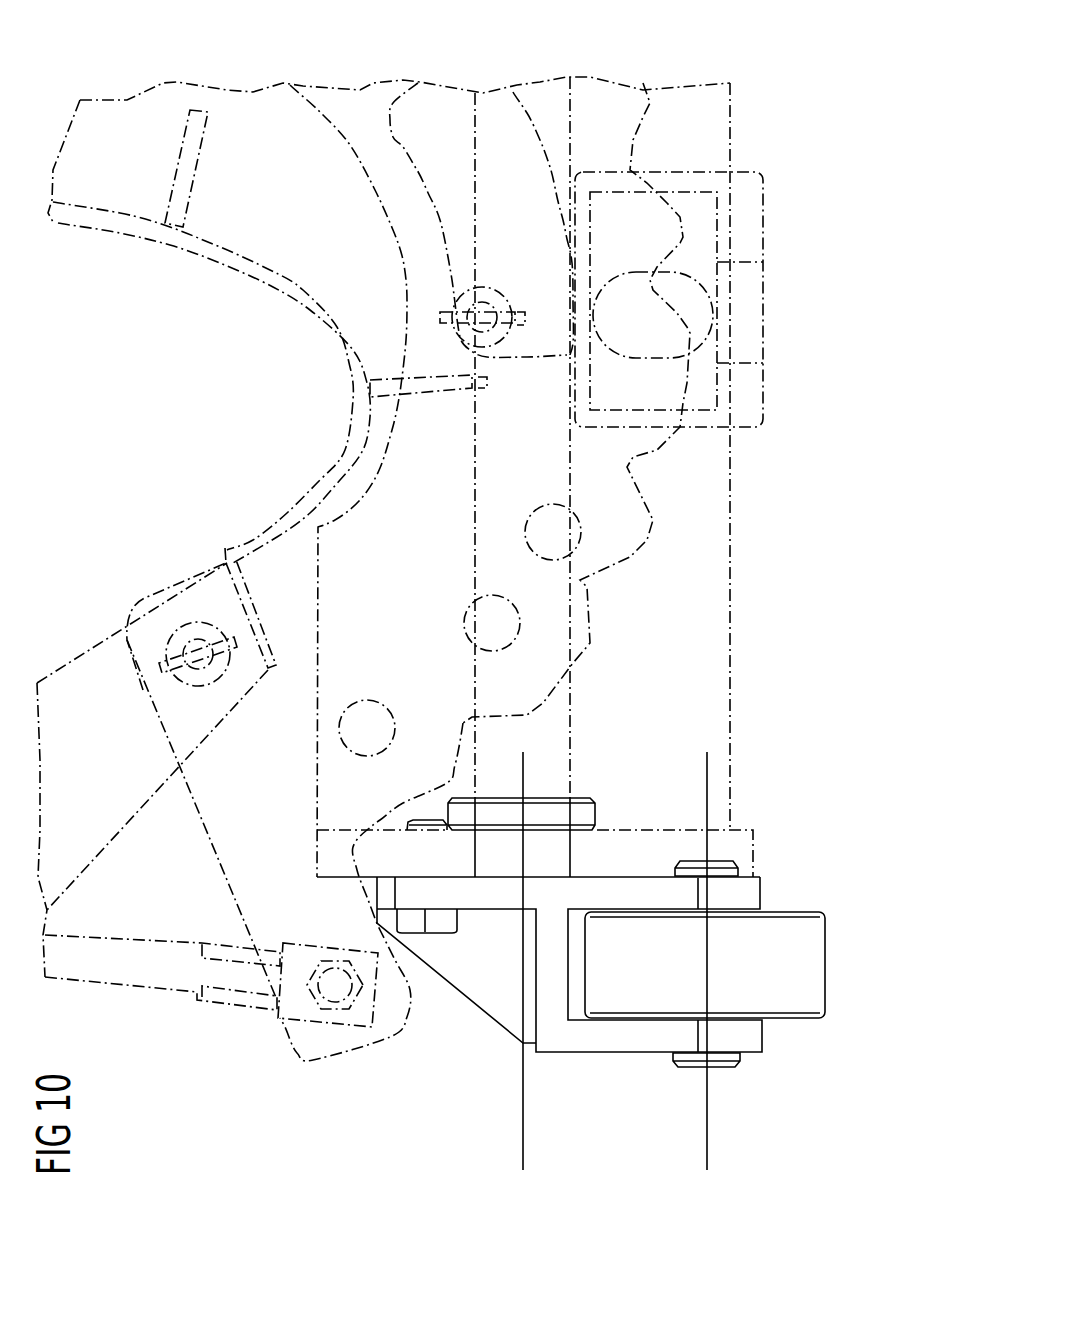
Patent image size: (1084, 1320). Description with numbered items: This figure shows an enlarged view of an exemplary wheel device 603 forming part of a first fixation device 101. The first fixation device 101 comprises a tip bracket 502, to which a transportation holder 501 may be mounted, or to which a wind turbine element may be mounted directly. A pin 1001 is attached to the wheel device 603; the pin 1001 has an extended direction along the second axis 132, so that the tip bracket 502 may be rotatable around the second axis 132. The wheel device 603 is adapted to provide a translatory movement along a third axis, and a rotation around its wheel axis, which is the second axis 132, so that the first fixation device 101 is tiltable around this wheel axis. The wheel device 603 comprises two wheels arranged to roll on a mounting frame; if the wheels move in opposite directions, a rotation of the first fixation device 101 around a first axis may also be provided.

The transportation holder 501 is at (253, 113).
The tip bracket 502 is at (713, 663).
The pin 1001 is at (500, 858).
The wheel device 603 is at (574, 1080).
The second axis 132 is at (523, 1120).
The first fixation device 101 is at (450, 1043).